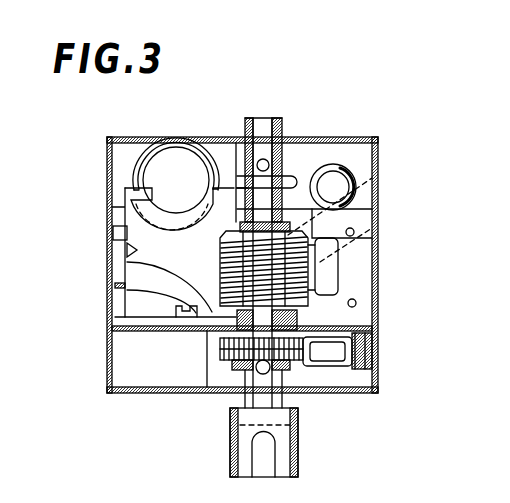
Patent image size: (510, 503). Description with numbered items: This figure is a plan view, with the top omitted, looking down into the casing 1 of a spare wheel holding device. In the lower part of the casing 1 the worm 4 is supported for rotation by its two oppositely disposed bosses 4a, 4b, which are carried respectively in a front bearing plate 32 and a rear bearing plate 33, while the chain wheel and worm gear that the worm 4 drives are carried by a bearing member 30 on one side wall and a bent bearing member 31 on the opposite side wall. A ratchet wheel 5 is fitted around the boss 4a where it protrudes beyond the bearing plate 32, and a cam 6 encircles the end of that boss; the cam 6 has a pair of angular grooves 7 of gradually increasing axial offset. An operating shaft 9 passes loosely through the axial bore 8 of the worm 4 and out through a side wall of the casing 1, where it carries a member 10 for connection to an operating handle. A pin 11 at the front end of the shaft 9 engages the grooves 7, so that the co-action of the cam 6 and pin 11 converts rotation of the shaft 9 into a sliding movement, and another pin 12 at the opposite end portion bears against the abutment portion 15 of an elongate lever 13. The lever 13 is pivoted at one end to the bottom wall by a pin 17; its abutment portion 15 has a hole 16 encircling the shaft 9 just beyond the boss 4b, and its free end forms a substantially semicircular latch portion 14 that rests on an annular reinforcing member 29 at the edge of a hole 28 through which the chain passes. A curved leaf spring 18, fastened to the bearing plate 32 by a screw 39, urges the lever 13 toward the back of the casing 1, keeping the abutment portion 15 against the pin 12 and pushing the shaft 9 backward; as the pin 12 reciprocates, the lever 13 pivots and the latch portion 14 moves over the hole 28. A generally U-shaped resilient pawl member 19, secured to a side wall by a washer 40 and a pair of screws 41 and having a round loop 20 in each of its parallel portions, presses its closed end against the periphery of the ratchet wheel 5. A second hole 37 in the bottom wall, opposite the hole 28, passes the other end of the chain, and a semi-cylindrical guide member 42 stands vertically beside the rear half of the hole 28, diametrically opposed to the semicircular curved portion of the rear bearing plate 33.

The casing 1 is at (378, 148).
The worm 4 is at (300, 273).
The boss 4a is at (300, 320).
The boss 4b is at (373, 190).
The ratchet wheel 5 is at (217, 350).
The cam 6 is at (287, 377).
The angular grooves 7 is at (217, 368).
The axial bore 8 is at (377, 210).
The operating shaft 9 is at (265, 130).
The member 10 is at (285, 458).
The pin 11 is at (255, 372).
The pin 12 is at (287, 175).
The lever 13 is at (223, 196).
The latch portion 14 is at (150, 202).
The abutment portion 15 is at (297, 172).
The hole 16 is at (257, 170).
The pin 17 is at (333, 183).
The leaf spring 18 is at (160, 266).
The pawl member 19 is at (317, 370).
The round loop 20 is at (347, 368).
The hole 28 is at (157, 171).
The annular reinforcing member 29 is at (123, 150).
The bearing member 30 is at (127, 238).
The bent bearing member 31 is at (358, 247).
The bearing plate 32 is at (122, 323).
The bearing plate 33 is at (222, 200).
The hole 37 is at (128, 347).
The screw 39 is at (127, 288).
The bracket 40 is at (367, 333).
The screws 41 is at (355, 347).
The semi-cylindrical guide member 42 is at (168, 148).